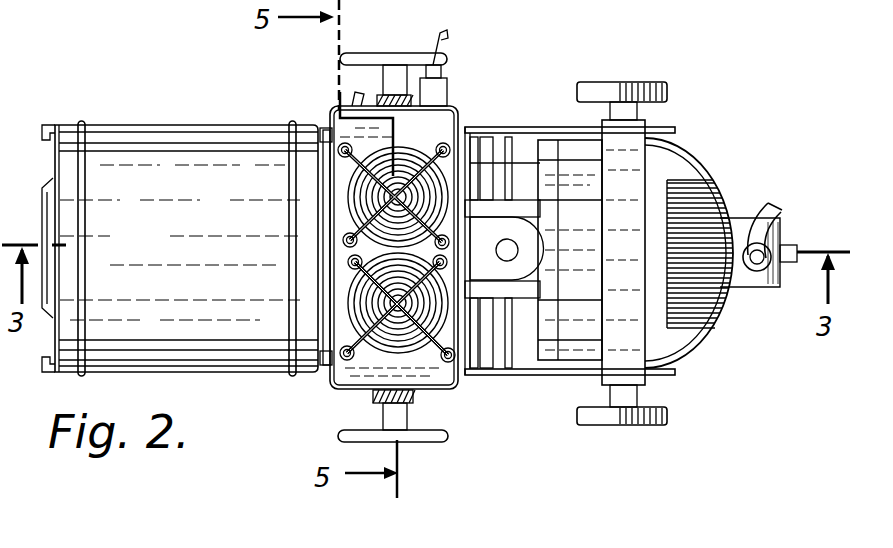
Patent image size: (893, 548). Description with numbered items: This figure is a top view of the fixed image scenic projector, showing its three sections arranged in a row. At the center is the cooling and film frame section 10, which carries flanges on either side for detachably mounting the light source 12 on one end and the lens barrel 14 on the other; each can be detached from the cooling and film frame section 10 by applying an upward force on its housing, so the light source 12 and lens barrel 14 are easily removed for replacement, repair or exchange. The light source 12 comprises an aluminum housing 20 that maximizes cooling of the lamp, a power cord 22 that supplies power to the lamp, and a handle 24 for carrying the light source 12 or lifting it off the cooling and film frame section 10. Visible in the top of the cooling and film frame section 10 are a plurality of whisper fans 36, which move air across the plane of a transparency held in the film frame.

The cooling and film frame section 10 is at (464, 106).
The light source 12 is at (546, 380).
The lens barrel 14 is at (156, 126).
The aluminum housing 20 is at (522, 127).
The power cord 22 is at (775, 216).
The handle 24 is at (660, 170).
The whisper fans 36 is at (338, 145).